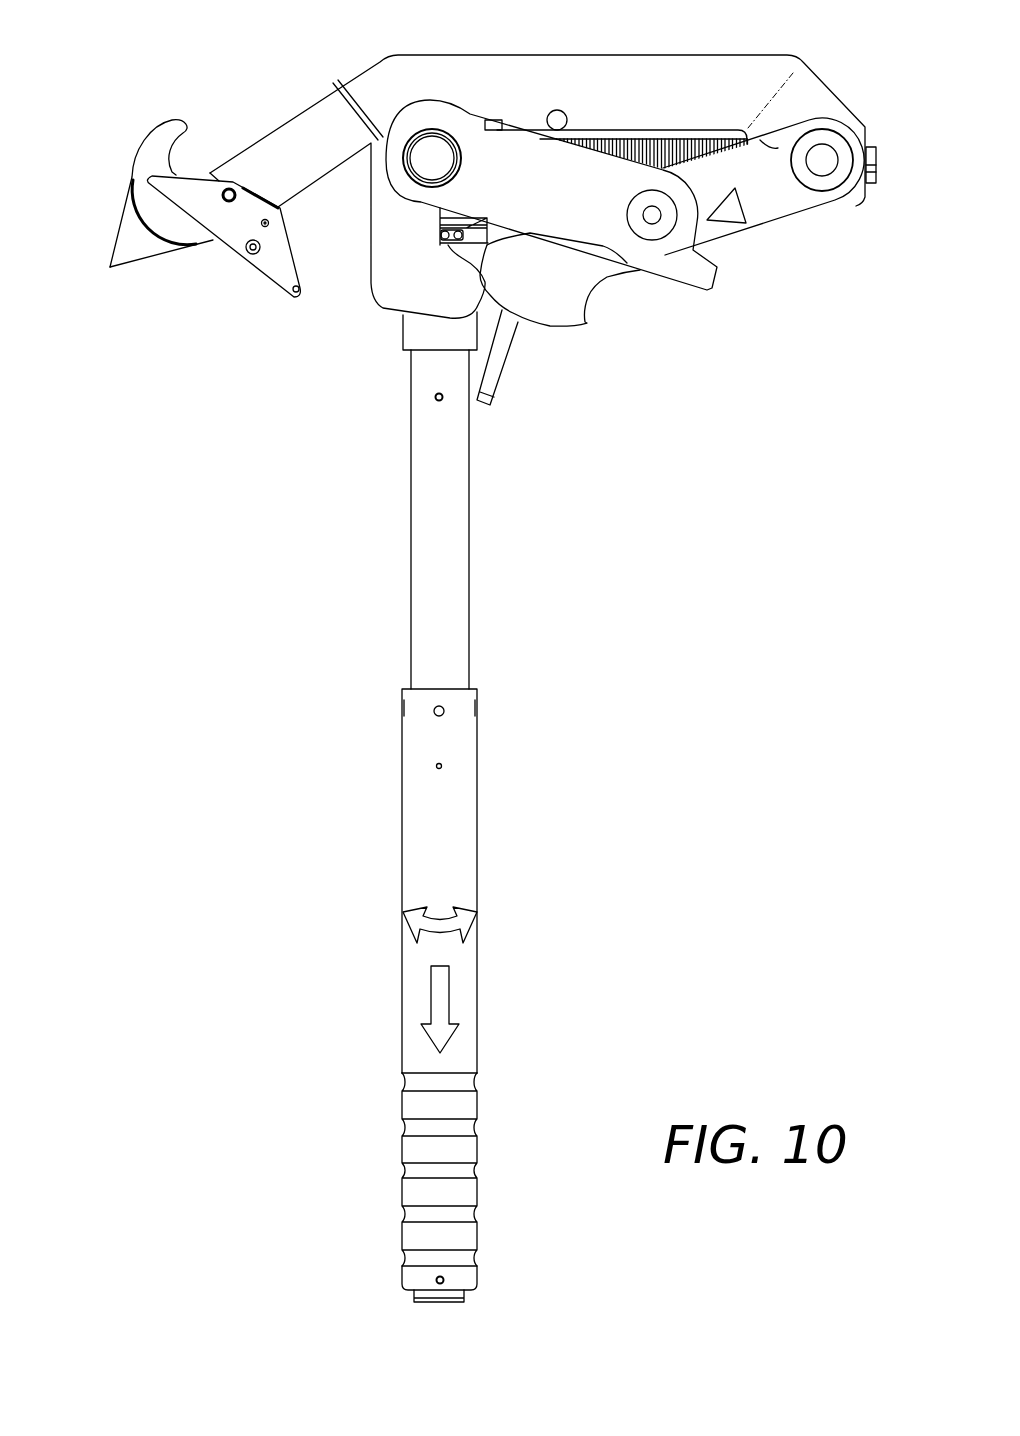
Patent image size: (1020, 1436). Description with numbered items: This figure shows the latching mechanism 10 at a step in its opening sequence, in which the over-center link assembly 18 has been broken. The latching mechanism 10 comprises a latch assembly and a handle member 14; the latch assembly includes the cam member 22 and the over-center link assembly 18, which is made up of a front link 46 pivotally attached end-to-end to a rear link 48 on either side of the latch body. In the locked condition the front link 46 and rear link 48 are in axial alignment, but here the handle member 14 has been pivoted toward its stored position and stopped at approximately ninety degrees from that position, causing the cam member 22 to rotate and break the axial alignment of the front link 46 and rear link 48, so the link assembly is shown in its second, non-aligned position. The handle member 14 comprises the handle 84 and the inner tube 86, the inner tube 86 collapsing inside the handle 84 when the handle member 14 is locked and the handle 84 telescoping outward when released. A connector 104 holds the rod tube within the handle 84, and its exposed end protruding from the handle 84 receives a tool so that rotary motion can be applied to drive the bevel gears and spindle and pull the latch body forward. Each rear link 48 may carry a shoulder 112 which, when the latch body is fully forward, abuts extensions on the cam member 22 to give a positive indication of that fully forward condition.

The latching mechanism 10 is at (293, 338).
The handle member 14 is at (395, 778).
The over-center link assembly 18 is at (653, 292).
The cam member 22 is at (386, 228).
The front link 46 is at (518, 157).
The rear link 48 is at (778, 205).
The handle 84 is at (460, 798).
The inner tube 86 is at (460, 599).
The connector 104 is at (410, 1297).
The shoulder 112 is at (773, 147).